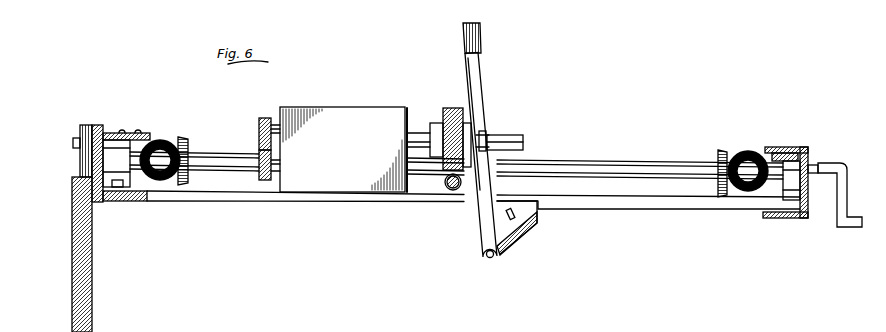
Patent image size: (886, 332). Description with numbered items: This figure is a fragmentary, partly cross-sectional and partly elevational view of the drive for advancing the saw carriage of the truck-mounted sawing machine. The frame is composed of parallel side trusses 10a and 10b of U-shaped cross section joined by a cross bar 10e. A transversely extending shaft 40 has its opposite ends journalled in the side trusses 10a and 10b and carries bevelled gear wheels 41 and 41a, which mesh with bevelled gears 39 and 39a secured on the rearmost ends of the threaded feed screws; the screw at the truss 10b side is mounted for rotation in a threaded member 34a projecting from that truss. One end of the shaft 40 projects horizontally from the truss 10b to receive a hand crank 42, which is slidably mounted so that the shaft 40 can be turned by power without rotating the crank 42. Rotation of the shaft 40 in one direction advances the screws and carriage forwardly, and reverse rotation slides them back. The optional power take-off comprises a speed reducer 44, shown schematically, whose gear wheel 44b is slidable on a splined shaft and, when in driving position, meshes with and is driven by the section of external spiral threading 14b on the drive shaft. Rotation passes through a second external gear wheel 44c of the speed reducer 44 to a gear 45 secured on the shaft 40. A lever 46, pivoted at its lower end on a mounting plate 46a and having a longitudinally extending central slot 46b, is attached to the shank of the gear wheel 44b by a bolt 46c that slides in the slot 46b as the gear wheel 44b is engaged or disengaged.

The side truss 10a is at (128, 203).
The side truss 10b is at (803, 220).
The cross bar 10e is at (636, 203).
The external spiral threading 14b is at (450, 192).
The threaded member 34a is at (793, 152).
The bevelled gear 39 is at (163, 137).
The bevelled gear 39a is at (745, 160).
The transversely extending shaft 40 is at (539, 166).
The bevelled gear wheel 41 is at (197, 152).
The bevelled gear wheel 41a is at (718, 153).
The hand crank 42 is at (840, 228).
The speed reducer 44 is at (343, 122).
The gear wheel 44b is at (455, 108).
The second external gear wheel 44c is at (261, 118).
The gear 45 is at (258, 176).
The lever 46 is at (478, 75).
The mounting plate 46a is at (505, 236).
The central slot 46b is at (489, 129).
The bolt 46c is at (523, 140).